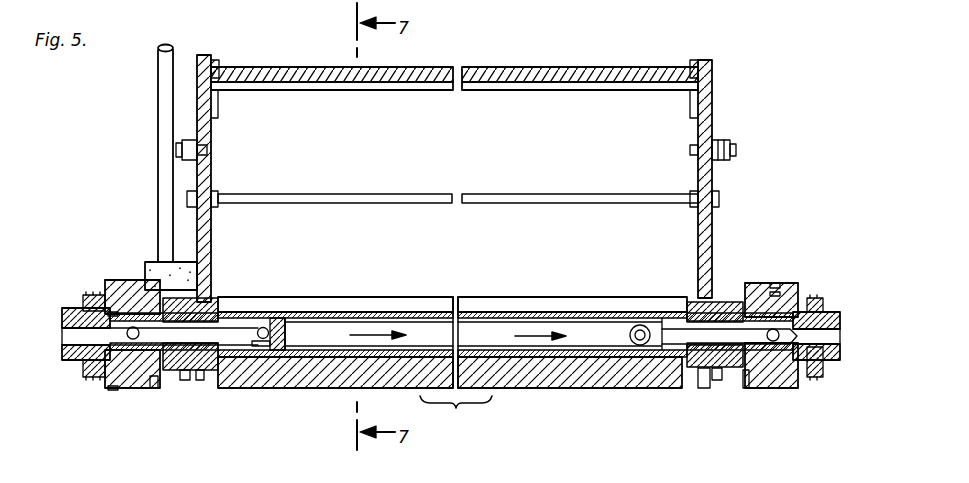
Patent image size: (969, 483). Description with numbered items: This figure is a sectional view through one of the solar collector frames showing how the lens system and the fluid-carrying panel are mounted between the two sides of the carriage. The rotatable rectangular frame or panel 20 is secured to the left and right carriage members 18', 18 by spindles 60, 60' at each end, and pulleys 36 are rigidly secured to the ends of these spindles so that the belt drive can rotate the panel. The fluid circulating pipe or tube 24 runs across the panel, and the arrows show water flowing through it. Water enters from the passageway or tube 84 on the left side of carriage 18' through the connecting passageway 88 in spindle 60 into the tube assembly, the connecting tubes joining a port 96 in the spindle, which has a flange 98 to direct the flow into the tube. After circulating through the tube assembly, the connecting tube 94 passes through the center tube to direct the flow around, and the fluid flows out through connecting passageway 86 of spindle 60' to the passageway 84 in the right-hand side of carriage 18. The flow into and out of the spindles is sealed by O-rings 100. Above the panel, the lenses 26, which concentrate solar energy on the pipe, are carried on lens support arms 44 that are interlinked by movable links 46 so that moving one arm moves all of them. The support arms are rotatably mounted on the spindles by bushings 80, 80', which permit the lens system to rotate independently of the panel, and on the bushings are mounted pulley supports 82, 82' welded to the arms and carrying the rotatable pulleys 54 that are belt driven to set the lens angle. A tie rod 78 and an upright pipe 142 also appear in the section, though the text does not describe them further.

The main rotatable carriage 18 is at (769, 253).
The carriage 18' is at (109, 257).
The rotatable rectangular frame or panel 20 is at (266, 385).
The fluid circulating pipe 24 is at (556, 380).
The lens 26 is at (565, 68).
The pulley gear 36 is at (85, 297).
The lens support arm 44 is at (211, 124).
The movable link 46 is at (736, 146).
The rotatable pulley 54 is at (168, 298).
The spindle 60 is at (131, 334).
The spindle 60' is at (774, 336).
The tie rod 78 is at (385, 195).
The bushing 80 is at (166, 412).
The bushing 80' is at (699, 406).
The pulley support 82 is at (187, 422).
The pulley support 82' is at (682, 395).
The passageway or tube 84 is at (107, 280).
The connecting passageway 86 is at (752, 388).
The connecting passageway 88 is at (155, 388).
The connecting tube 94 is at (640, 325).
The port 96 is at (290, 372).
The flange 98 is at (285, 320).
The O-ring 100 is at (112, 388).
The pipe 142 is at (165, 105).